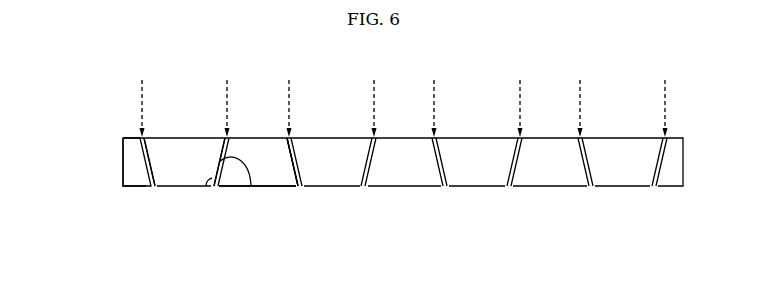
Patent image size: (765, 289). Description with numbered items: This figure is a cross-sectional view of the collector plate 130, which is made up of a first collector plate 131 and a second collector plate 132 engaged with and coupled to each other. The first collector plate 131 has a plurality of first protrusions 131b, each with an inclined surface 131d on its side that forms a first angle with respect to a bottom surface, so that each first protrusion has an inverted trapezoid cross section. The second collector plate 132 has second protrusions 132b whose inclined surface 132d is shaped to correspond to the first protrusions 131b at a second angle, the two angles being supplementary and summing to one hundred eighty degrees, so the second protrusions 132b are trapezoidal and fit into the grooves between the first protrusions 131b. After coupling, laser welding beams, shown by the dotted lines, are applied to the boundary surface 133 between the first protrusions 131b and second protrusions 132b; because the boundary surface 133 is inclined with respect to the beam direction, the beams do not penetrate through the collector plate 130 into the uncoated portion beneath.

The collector plate 130 is at (98, 105).
The first collector plate 131 is at (183, 136).
The first protrusions 131b is at (162, 143).
The inclined surface 131d is at (218, 158).
The second collector plate 132 is at (272, 188).
The inclined surface 132d is at (251, 188).
The second protrusions 132b is at (285, 178).
The boundary surface 133 is at (141, 137).